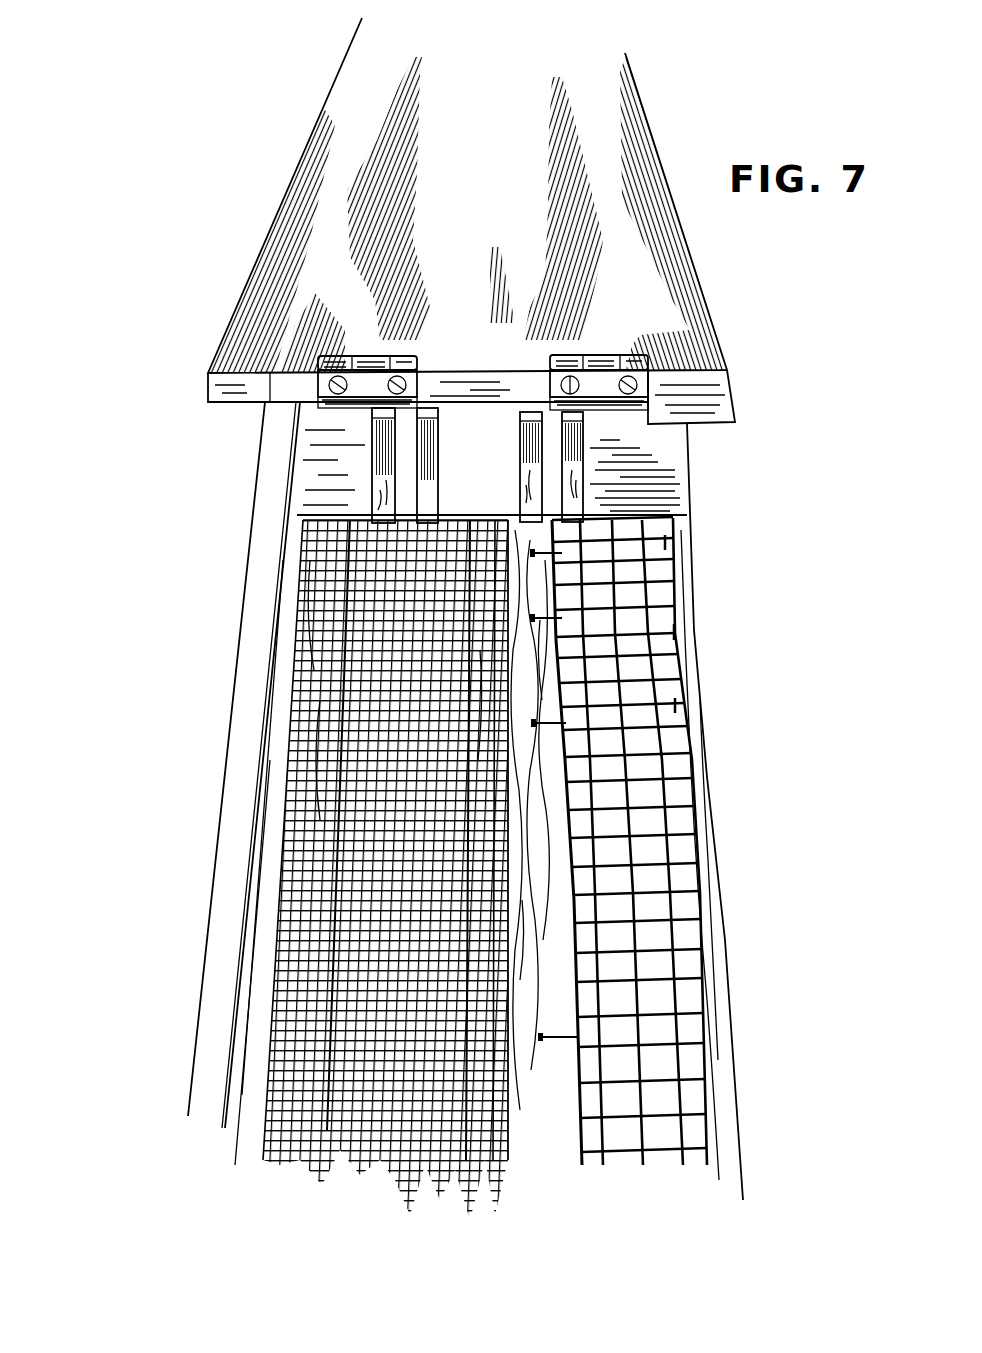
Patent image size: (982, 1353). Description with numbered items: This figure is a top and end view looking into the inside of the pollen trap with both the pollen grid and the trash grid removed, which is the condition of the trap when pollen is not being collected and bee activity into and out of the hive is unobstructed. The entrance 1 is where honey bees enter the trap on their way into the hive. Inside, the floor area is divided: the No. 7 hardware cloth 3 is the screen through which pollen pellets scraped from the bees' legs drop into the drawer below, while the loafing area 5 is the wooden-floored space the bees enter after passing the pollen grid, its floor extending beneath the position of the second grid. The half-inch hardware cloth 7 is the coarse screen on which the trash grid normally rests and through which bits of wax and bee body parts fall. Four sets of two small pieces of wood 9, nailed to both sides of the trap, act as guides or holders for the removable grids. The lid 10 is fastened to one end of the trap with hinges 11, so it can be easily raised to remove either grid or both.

The entrance to the pollen trap 1 is at (197, 835).
The No. 7 hardware cloth 3 is at (390, 663).
The loafing area 5 is at (520, 802).
The half-inch hardware cloth 7 is at (627, 690).
The small pieces of wood 9 is at (519, 438).
The lid 10 is at (481, 234).
The hinges 11 is at (362, 352).